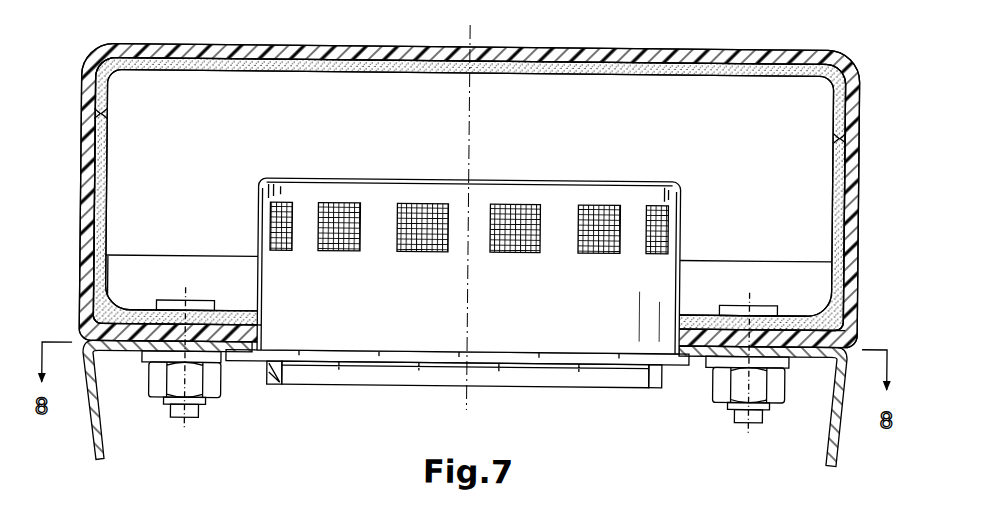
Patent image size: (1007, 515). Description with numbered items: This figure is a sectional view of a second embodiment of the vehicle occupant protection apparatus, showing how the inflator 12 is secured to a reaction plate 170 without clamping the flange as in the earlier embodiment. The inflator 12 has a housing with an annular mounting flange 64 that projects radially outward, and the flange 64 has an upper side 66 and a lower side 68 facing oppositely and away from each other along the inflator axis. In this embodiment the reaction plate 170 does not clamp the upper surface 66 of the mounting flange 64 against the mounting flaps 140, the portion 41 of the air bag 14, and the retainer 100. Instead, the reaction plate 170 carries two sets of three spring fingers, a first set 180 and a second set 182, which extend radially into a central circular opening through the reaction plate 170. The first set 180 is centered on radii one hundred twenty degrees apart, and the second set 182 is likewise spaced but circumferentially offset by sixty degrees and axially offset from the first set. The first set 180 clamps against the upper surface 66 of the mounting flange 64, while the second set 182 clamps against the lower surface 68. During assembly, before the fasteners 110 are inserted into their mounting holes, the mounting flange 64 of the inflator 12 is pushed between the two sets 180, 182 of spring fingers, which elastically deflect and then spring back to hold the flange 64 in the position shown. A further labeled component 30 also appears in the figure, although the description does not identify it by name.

The inflator 12 is at (647, 293).
The inflatable vehicle occupant protection device 14 is at (688, 68).
The outer shell 30 is at (557, 54).
The portion of the air bag 41 is at (787, 325).
The mounting flange 64 is at (434, 361).
The upper side of the mounting flange 66 is at (250, 342).
The lower side of the mounting flange 68 is at (273, 370).
The retainer 100 is at (108, 259).
The fasteners 110 is at (175, 419).
The mounting flaps 140 is at (840, 334).
The reaction plate 170 is at (849, 432).
The first set of spring fingers 180 is at (703, 352).
The second set of spring fingers 182 is at (242, 372).